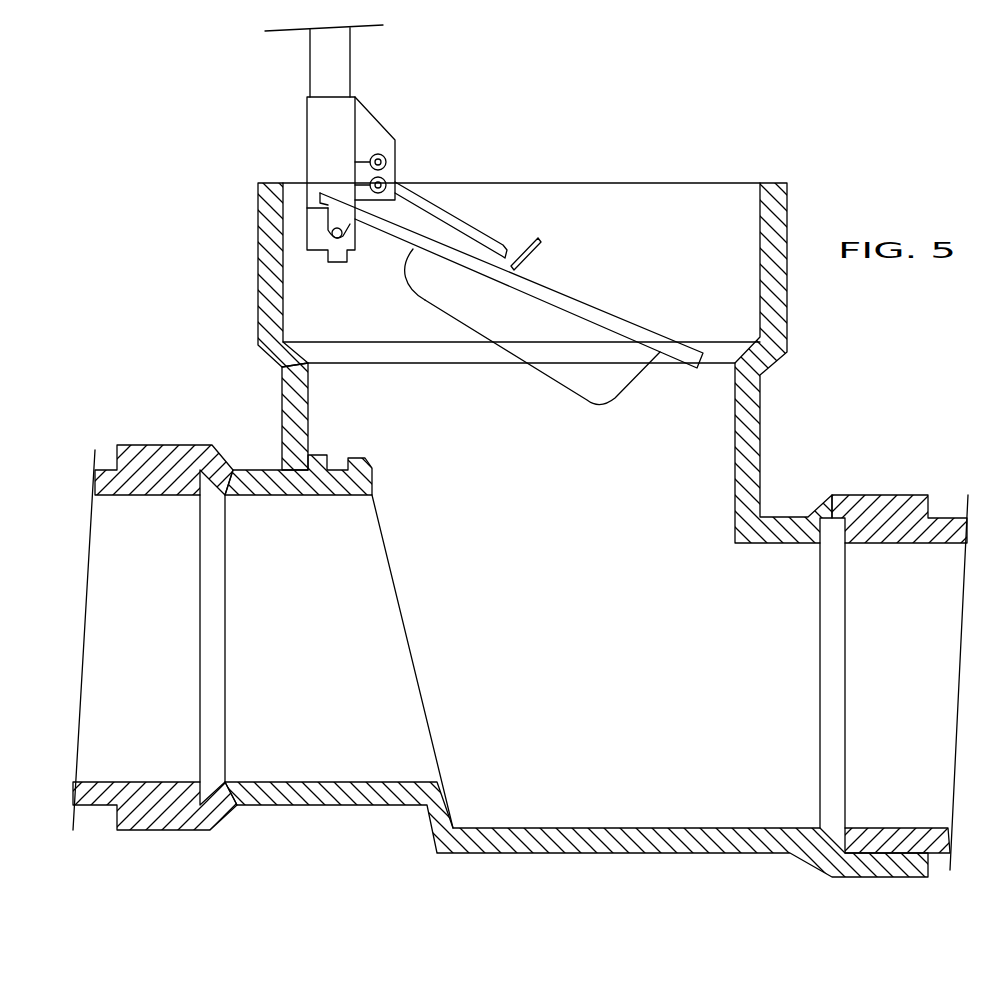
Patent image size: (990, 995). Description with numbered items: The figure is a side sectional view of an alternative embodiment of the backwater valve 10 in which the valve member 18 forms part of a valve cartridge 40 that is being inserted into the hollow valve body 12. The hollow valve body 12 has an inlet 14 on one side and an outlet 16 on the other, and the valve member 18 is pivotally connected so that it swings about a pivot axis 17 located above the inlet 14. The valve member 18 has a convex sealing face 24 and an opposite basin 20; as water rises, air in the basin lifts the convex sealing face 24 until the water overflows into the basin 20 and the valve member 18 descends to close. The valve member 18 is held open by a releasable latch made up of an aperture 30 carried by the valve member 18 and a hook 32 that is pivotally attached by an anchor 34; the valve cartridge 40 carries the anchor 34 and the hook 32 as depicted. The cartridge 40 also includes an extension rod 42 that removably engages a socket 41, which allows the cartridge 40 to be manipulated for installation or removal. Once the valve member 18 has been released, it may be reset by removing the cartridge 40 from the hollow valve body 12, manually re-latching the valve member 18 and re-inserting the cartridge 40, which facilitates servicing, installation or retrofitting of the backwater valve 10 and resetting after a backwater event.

The backwater valve 10 is at (208, 271).
The hollow valve body 12 is at (287, 404).
The inlet 14 is at (292, 677).
The outlet 16 is at (762, 687).
The pivot axis 17 is at (330, 230).
The valve member 18 is at (597, 374).
The basin 20 is at (600, 305).
The convex sealing face 24 is at (477, 324).
The aperture 30 is at (540, 253).
The hook 32 is at (440, 197).
The anchor 34 is at (378, 154).
The valve cartridge 40 is at (293, 143).
The socket 41 is at (307, 98).
The extension rod 42 is at (333, 52).